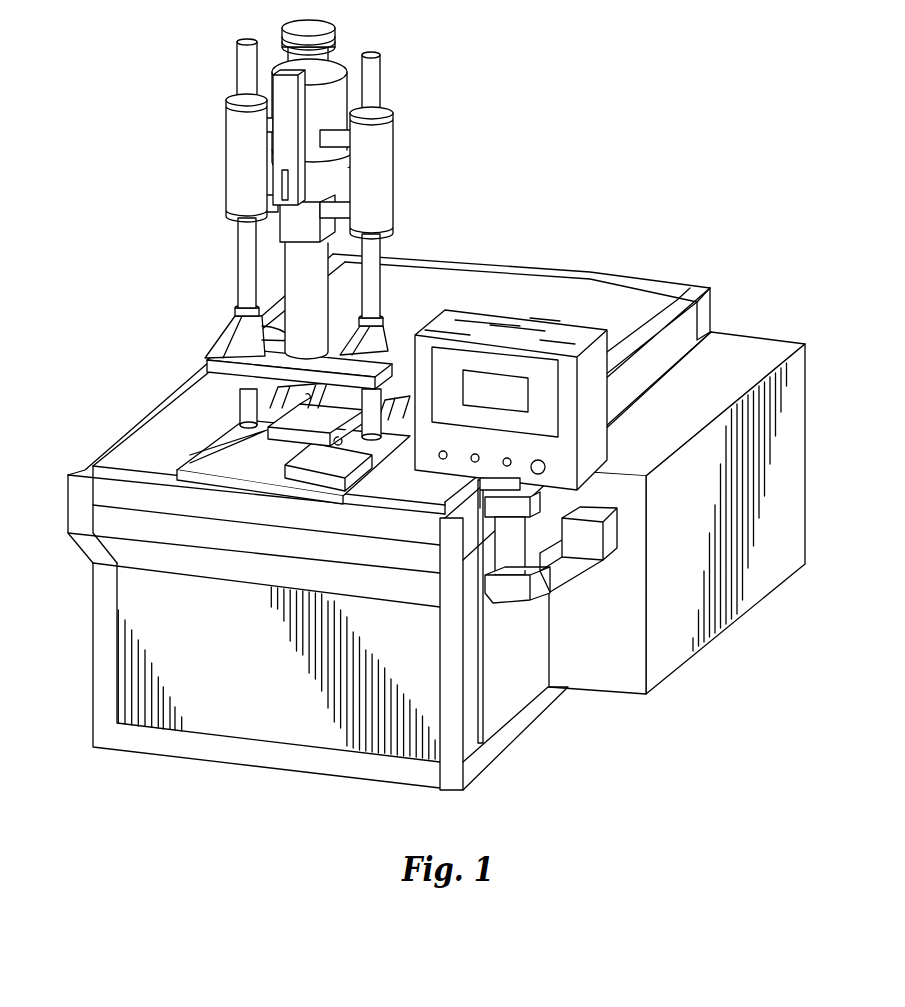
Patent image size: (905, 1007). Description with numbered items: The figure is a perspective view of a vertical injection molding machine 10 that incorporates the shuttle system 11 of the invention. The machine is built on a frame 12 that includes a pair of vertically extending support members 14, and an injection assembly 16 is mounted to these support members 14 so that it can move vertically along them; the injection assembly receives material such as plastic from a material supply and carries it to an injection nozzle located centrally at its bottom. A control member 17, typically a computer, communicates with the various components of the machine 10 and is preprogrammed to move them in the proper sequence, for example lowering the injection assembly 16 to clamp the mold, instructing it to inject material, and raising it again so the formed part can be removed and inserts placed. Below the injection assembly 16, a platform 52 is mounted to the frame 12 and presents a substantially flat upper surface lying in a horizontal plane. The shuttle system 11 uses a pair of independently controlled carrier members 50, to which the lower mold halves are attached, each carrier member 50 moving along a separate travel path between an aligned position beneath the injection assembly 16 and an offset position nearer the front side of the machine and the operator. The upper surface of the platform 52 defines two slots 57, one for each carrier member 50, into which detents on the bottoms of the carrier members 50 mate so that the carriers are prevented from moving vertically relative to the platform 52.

The vertical injection molding machine 10 is at (414, 405).
The shuttle system 11 is at (193, 437).
The frame 12 is at (299, 230).
The support members 14 is at (237, 75).
The injection assembly 16 is at (405, 213).
The control member 17 is at (538, 322).
The carrier members 50 is at (290, 392).
The platform 52 is at (185, 470).
The slots 57 is at (176, 467).